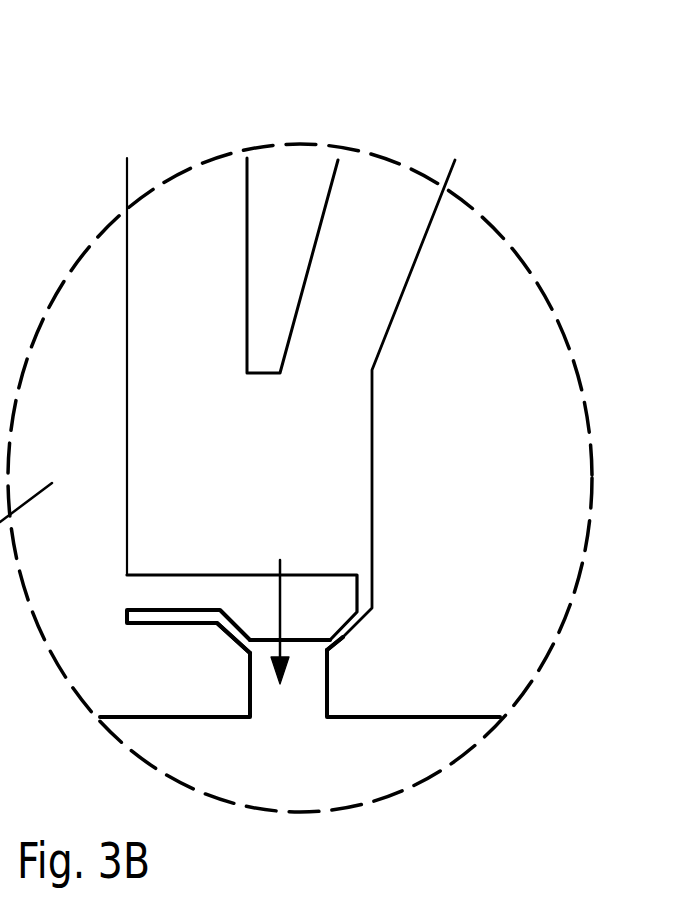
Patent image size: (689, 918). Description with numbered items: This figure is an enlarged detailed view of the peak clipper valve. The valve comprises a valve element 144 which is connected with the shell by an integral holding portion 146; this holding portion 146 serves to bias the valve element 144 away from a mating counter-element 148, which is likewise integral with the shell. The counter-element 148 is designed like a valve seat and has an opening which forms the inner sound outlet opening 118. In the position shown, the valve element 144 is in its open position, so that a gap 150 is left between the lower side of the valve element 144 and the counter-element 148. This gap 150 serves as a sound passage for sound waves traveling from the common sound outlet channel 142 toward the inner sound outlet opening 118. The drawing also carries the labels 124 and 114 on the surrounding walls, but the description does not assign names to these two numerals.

The wall of the bottom plate 124 is at (185, 228).
The inlet / top part 114 is at (358, 243).
The common sound outlet channel 142 is at (303, 500).
The integral holding portion 146 is at (170, 598).
The valve element 144 is at (315, 608).
The counter-element 148 is at (340, 638).
The gap 150 is at (358, 652).
The inner sound outlet opening 118 is at (303, 700).